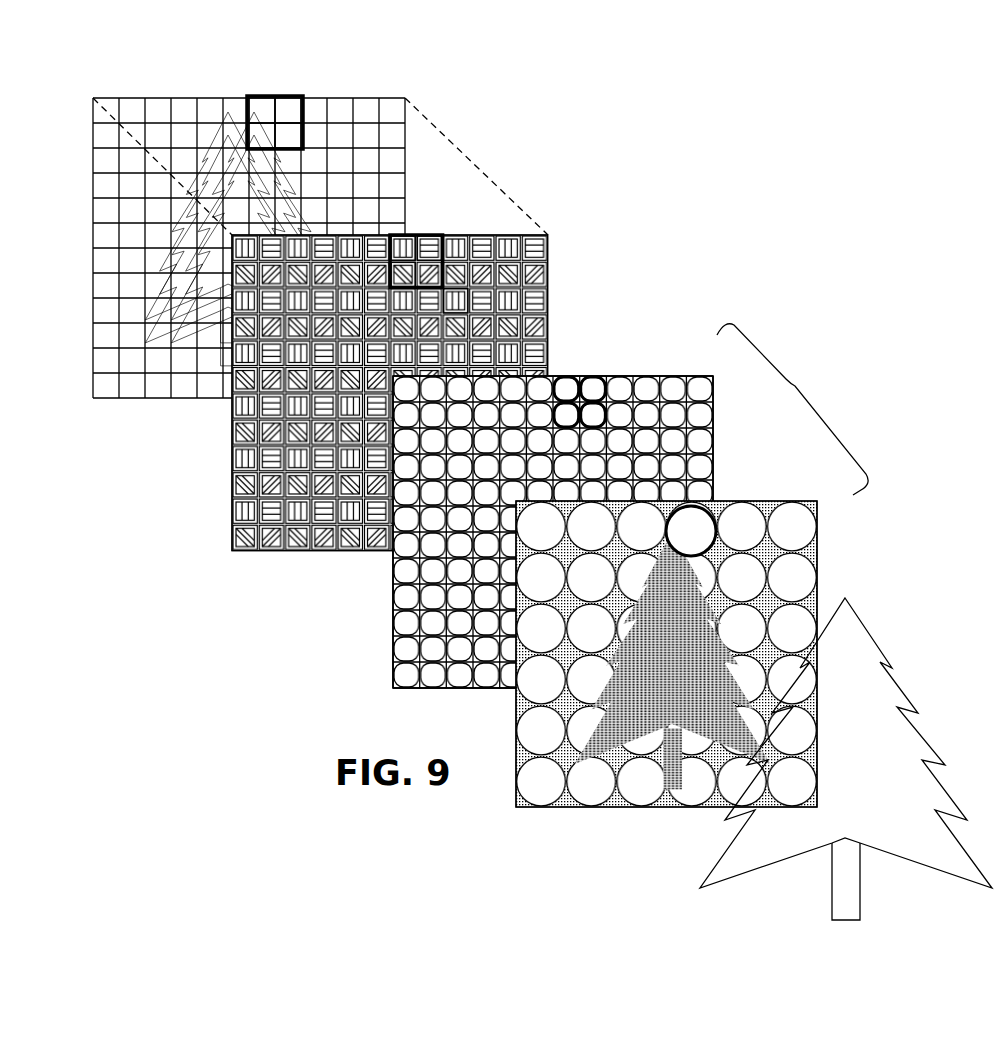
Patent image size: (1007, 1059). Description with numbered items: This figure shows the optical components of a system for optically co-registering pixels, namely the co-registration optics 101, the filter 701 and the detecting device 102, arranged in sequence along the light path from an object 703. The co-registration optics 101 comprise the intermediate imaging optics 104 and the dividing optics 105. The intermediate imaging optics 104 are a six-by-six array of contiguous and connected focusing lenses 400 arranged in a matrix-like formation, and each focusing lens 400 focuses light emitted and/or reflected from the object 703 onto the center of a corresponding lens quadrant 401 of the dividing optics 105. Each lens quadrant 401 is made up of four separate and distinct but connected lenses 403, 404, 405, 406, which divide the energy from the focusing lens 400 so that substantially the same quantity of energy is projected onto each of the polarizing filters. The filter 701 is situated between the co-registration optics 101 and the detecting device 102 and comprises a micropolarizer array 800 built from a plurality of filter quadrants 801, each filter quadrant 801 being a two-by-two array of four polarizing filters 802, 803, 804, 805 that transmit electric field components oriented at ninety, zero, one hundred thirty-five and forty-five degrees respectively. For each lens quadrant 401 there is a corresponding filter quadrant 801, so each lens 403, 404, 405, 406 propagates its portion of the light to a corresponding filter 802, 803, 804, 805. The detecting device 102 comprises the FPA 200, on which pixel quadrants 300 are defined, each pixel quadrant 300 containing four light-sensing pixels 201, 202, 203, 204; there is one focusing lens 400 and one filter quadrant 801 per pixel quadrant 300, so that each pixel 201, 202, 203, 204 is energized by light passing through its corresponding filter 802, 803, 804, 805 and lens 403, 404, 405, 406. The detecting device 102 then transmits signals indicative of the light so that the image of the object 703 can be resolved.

The co-registration optics 101 is at (804, 364).
The detecting device 102 is at (392, 54).
The intermediate imaging optics 104 is at (743, 502).
The dividing optics 105 is at (792, 409).
The FPA 200 is at (376, 97).
The light-sensing pixel 201 is at (262, 110).
The light-sensing pixel 202 is at (288, 110).
The light-sensing pixel 203 is at (262, 135).
The light-sensing pixel 204 is at (288, 135).
The pixel quadrant 300 is at (271, 96).
The focusing lens 400 is at (691, 531).
The lens quadrant 401 is at (589, 388).
The lens 403 is at (566, 389).
The lens 404 is at (593, 389).
The lens 405 is at (566, 415).
The lens 406 is at (593, 415).
The filter 701 is at (561, 198).
The object 703 is at (846, 759).
The micropolarizer array 800 is at (550, 252).
The filter quadrant 801 is at (444, 235).
The polarizing filter 802 is at (403, 243).
The polarizing filter 803 is at (423, 242).
The polarizing filter 804 is at (413, 268).
The polarizing filter 805 is at (452, 296).